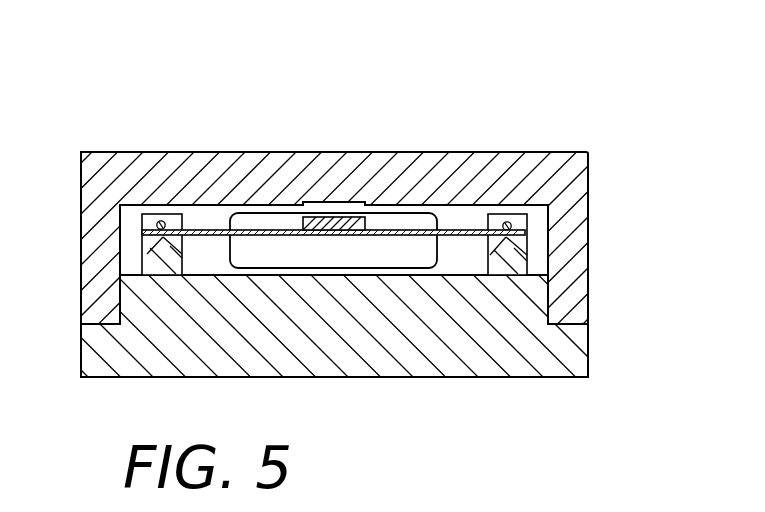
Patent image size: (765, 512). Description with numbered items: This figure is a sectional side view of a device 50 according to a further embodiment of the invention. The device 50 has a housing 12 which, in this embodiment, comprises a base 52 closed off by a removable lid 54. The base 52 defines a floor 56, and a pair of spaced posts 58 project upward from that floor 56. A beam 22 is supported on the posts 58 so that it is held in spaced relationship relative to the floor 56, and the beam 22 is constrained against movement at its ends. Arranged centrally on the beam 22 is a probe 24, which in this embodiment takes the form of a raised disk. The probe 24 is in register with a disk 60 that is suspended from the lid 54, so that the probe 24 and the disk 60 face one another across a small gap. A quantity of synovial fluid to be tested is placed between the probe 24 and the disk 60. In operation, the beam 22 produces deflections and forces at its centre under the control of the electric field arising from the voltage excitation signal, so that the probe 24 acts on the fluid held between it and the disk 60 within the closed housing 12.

The device 50 is at (62, 77).
The housing 12 is at (377, 224).
The removable lid 54 is at (578, 287).
The base 52 is at (577, 362).
The posts 58 is at (153, 254).
The floor 56 is at (448, 268).
The beam 22 is at (463, 232).
The probe 24 is at (370, 222).
The disk 60 is at (306, 206).